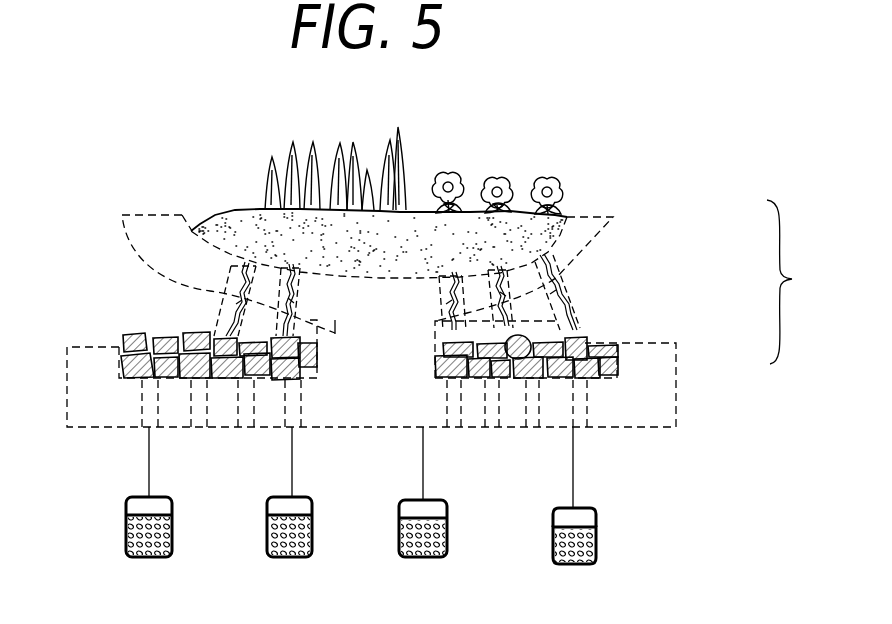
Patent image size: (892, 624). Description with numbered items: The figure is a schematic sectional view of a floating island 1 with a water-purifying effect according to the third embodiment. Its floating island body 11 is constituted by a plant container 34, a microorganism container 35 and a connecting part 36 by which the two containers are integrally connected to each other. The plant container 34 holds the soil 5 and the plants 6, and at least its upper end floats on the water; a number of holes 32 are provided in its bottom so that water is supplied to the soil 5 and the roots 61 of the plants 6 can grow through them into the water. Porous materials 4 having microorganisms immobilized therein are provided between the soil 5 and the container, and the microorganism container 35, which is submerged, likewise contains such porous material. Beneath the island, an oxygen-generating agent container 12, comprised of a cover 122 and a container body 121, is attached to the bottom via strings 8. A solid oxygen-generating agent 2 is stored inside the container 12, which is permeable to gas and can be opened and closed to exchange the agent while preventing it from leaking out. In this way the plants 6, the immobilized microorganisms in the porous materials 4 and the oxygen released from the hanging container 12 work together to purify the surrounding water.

The floating island 1 is at (624, 126).
The solid oxygen-generating agent 2 is at (553, 545).
The porous materials 4 is at (607, 342).
The soil 5 is at (224, 208).
The plants 6 is at (400, 131).
The strings 8 is at (576, 451).
The floating island body 11 is at (801, 282).
The oxygen-generating agent container 12 is at (618, 535).
The holes 32 is at (553, 276).
The plant container 34 is at (627, 229).
The microorganism container 35 is at (695, 373).
The connecting part 36 is at (335, 333).
The roots 61 is at (560, 314).
The container body 121 is at (597, 560).
The cover 122 is at (598, 512).